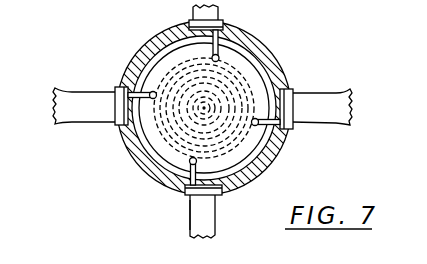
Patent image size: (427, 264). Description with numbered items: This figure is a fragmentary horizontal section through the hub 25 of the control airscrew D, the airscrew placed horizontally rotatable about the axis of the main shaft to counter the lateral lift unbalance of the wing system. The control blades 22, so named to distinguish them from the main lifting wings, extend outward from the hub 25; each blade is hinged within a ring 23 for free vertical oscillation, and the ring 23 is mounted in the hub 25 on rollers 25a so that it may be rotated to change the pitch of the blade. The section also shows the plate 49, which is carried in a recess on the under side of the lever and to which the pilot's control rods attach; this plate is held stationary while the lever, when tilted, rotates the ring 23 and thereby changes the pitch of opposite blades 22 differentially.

The control blades 22 is at (325, 123).
The ring 23 is at (115, 125).
The hub 25 is at (281, 73).
The rollers 25a is at (226, 32).
The plate 49 is at (134, 56).
The control airscrew D is at (198, 205).